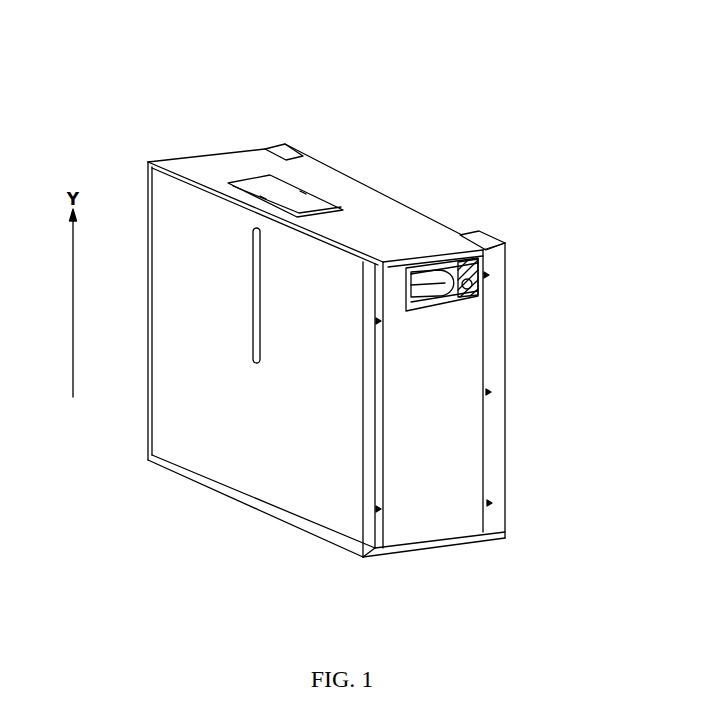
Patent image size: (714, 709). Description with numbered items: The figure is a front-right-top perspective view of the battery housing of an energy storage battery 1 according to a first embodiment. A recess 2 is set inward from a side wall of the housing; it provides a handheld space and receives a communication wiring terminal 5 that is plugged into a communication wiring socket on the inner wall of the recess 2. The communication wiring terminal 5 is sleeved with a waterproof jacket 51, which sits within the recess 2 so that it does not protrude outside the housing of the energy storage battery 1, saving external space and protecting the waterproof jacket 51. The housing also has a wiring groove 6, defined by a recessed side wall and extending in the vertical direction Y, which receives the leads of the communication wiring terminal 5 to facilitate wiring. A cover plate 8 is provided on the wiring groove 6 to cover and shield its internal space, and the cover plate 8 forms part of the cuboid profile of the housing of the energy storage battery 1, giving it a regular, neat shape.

The energy storage battery 1 is at (147, 143).
The recess 2 is at (457, 298).
The communication wiring terminal 5 is at (428, 283).
The waterproof jacket 51 is at (430, 288).
The wiring groove 6 is at (280, 148).
The cover plate 8 is at (300, 151).